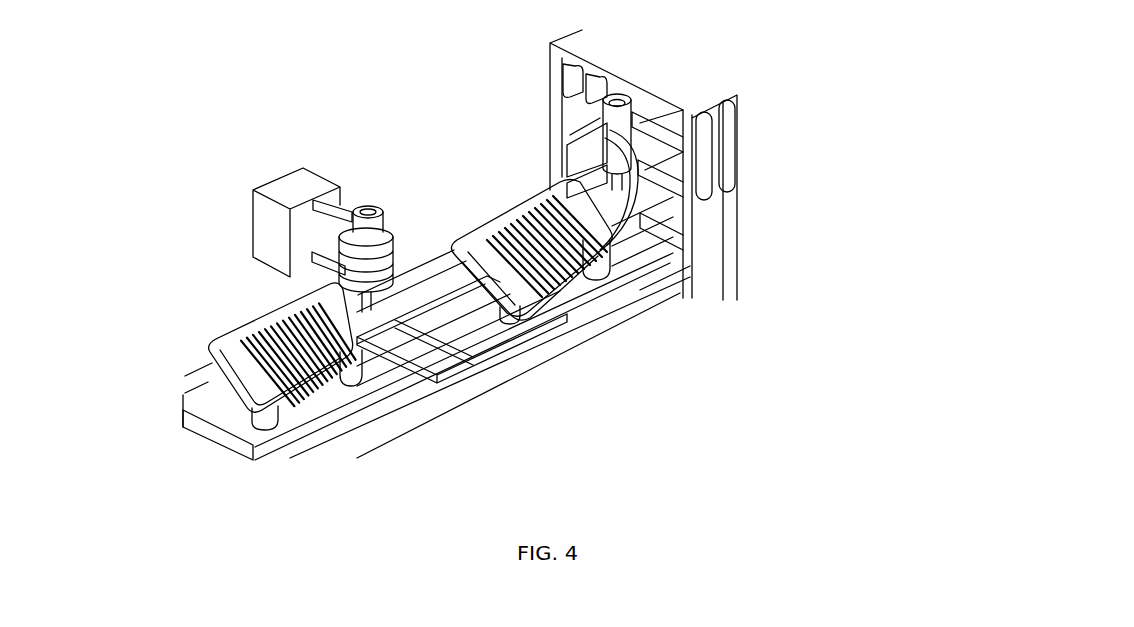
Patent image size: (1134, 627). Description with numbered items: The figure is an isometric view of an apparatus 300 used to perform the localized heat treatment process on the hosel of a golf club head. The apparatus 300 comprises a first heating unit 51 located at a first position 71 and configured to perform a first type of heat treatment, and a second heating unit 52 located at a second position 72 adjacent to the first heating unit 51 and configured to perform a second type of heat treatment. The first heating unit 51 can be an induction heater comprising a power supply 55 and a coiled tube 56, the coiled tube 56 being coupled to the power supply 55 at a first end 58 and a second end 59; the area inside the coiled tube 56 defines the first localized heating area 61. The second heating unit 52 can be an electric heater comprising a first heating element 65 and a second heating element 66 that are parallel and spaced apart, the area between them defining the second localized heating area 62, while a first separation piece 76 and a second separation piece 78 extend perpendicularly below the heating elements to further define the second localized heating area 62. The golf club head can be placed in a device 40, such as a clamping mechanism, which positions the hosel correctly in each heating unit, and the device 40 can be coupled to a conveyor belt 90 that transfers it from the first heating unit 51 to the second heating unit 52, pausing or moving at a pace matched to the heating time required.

The apparatus 300 is at (822, 289).
The device 40 is at (375, 378).
The first position 71 is at (353, 395).
The second position 72 is at (673, 265).
The conveyor belt 90 is at (408, 350).
The first heating unit 51 is at (225, 200).
The power supply 55 is at (278, 183).
The first end 58 is at (316, 208).
The second end 59 is at (313, 258).
The first localized heating area 61 is at (385, 233).
The coiled tube 56 is at (387, 257).
The second heating unit 52 is at (748, 103).
The first heating element 65 is at (575, 78).
The second localized heating area 62 is at (610, 98).
The first separation piece 76 is at (573, 137).
The second heating element 66 is at (683, 143).
The second separation piece 78 is at (667, 180).